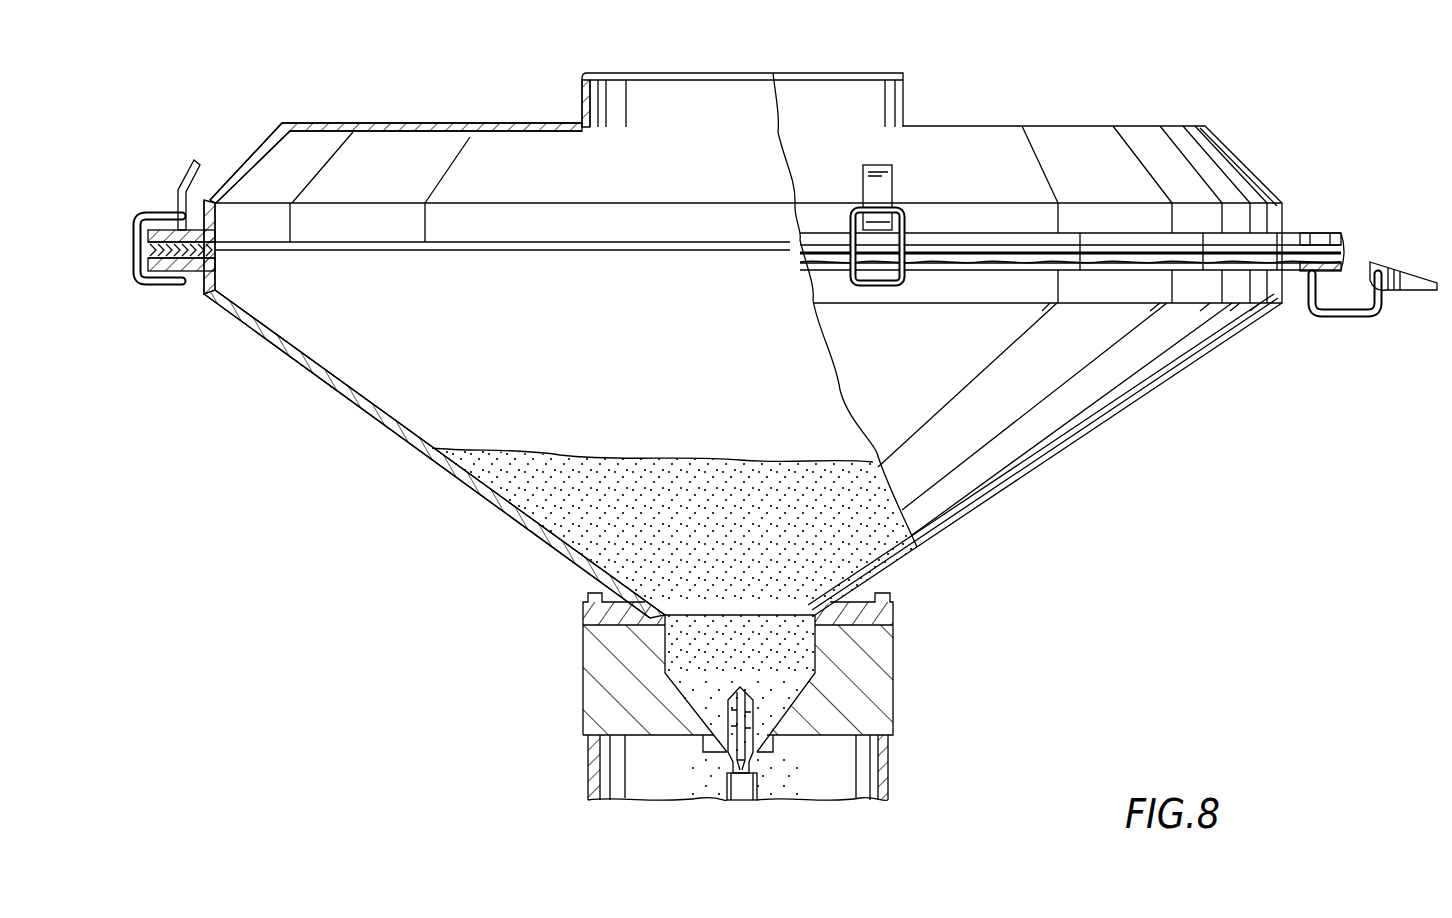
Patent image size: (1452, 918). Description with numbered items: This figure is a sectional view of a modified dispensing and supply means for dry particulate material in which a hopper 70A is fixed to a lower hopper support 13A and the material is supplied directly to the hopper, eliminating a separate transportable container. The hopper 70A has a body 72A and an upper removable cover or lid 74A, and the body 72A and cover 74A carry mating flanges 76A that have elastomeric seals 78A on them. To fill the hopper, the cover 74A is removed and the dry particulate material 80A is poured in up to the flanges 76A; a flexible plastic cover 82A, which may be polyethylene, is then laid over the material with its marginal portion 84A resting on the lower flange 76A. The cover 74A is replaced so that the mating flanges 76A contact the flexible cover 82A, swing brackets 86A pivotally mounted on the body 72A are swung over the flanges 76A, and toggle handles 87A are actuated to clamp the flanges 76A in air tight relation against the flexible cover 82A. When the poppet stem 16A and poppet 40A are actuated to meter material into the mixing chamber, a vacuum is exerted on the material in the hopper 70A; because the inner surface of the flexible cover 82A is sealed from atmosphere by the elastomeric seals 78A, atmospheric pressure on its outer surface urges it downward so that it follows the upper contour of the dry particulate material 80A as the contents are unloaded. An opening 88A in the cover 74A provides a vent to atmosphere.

The hopper support 13A is at (890, 643).
The poppet stem 16A is at (760, 772).
The poppet 40A is at (745, 712).
The hopper 70A is at (743, 454).
The body 72A is at (1120, 415).
The removable cover or lid 74A is at (1213, 153).
The mating flanges 76A is at (158, 232).
The elastomeric seals 78A is at (212, 247).
The dry particulate material 80A is at (545, 503).
The flexible plastic cover 82A is at (283, 360).
The marginal portion 84A is at (145, 257).
The swing brackets 86A is at (135, 226).
The toggle handles 87A is at (185, 182).
The opening 88A is at (668, 73).